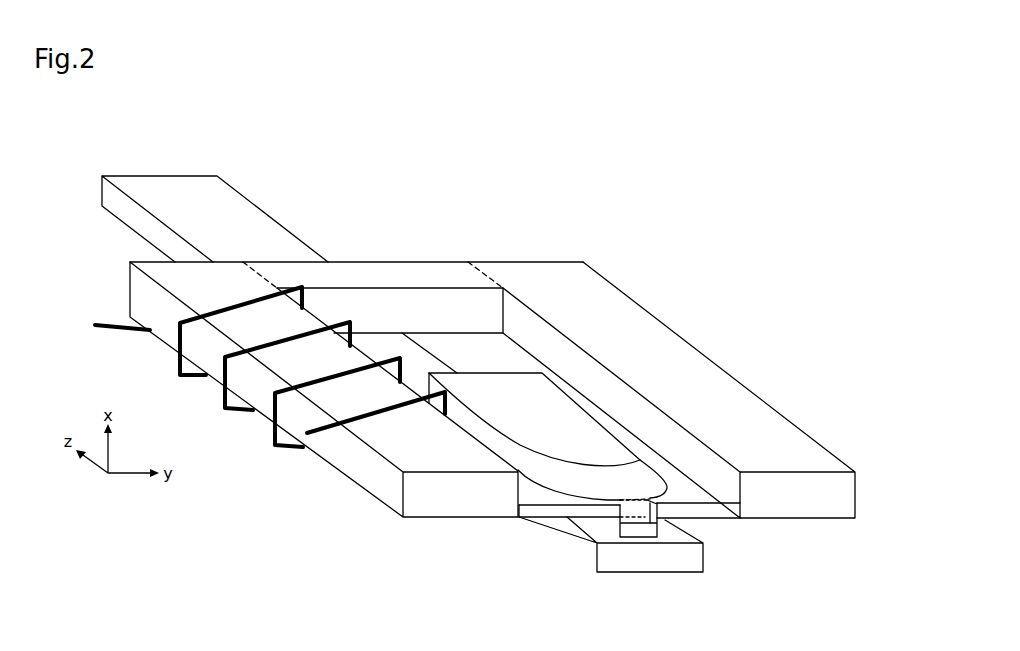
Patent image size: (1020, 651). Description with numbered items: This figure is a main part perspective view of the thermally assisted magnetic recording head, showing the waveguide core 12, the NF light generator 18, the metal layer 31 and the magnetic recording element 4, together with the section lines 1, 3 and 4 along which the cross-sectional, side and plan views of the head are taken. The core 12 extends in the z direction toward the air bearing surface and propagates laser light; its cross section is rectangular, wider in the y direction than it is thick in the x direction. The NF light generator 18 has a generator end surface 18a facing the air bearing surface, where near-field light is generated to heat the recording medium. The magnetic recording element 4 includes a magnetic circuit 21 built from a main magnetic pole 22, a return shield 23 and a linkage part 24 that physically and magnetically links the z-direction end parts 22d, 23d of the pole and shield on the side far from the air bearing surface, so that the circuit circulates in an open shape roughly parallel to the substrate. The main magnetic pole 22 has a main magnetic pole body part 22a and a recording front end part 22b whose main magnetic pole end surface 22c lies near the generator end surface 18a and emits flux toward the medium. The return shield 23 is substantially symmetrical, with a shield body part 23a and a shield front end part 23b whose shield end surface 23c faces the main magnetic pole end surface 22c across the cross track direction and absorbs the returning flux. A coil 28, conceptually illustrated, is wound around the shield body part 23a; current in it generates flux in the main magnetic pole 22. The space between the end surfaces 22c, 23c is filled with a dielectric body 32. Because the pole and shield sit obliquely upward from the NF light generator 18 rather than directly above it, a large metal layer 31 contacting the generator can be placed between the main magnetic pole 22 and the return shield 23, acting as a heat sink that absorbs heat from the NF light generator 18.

The line 1- 1 is at (315, 148).
The line 3- 3 is at (278, 575).
The magnetic recording element 4 is at (90, 283).
The core 12 is at (317, 187).
The NF light generator 18 is at (591, 557).
The generator end surface 18a is at (640, 532).
The magnetic circuit 21 is at (492, 384).
The main magnetic pole 22 is at (661, 381).
The main magnetic pole body part 22a is at (697, 352).
The recording front end part 22b is at (717, 497).
The main magnetic pole end surface 22c is at (660, 519).
The z-direction end part of the main magnetic pole 22d is at (502, 270).
The return shield 23 is at (375, 394).
The shield body part 23a is at (408, 457).
The shield front end part 23b is at (528, 493).
The shield end surface 23c is at (612, 525).
The z-direction end part of the return shield 23d is at (194, 267).
The linkage part 24 is at (353, 268).
The coil 28 is at (178, 370).
The metal layer 31 is at (479, 390).
The dielectric body 32 is at (645, 508).